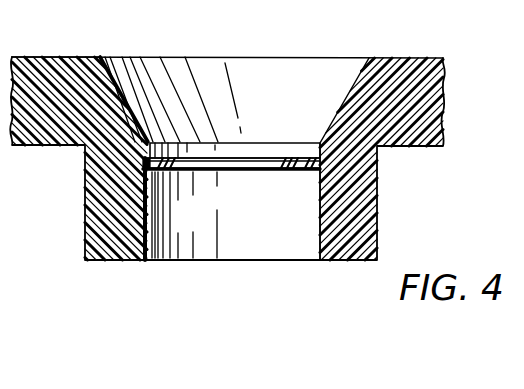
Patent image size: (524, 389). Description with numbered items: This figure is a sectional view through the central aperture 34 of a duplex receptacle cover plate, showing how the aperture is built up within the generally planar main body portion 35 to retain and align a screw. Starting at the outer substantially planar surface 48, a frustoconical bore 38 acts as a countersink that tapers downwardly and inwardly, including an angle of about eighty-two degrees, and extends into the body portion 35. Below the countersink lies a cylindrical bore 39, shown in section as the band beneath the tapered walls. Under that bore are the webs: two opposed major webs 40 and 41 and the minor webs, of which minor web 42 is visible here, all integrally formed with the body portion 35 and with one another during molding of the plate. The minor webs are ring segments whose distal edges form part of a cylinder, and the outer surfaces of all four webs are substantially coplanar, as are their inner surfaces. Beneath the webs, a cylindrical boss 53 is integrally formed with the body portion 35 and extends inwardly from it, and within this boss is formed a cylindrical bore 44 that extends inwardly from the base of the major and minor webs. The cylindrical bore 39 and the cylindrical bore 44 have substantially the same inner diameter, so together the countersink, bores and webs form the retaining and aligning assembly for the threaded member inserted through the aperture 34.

The central aperture 34 is at (331, 53).
The main body portion 35 is at (426, 56).
The frustoconical bore 38 is at (243, 72).
The cylindrical bore 39 is at (283, 116).
The major web 40 is at (287, 170).
The major web 41 is at (173, 173).
The minor web 42 is at (247, 172).
The cylindrical bore 44 is at (320, 230).
The outer substantially planar surface 48 is at (77, 31).
The cylindrical boss 53 is at (377, 205).